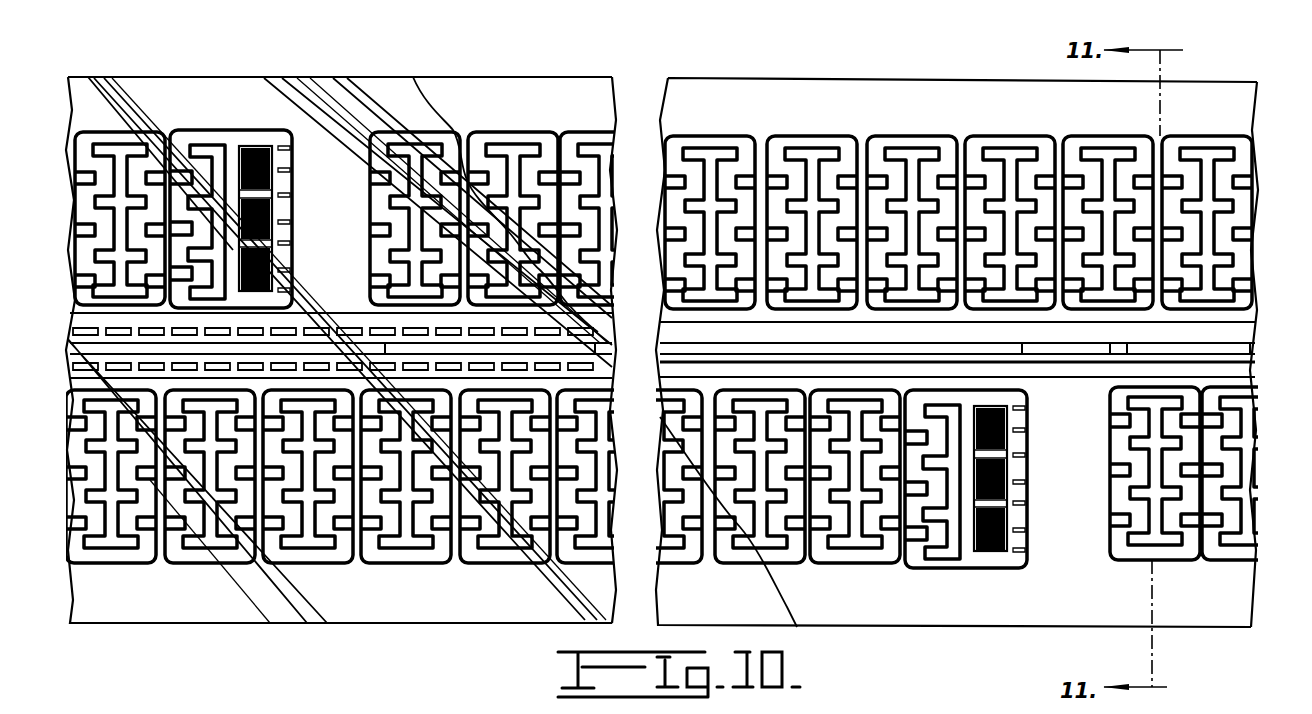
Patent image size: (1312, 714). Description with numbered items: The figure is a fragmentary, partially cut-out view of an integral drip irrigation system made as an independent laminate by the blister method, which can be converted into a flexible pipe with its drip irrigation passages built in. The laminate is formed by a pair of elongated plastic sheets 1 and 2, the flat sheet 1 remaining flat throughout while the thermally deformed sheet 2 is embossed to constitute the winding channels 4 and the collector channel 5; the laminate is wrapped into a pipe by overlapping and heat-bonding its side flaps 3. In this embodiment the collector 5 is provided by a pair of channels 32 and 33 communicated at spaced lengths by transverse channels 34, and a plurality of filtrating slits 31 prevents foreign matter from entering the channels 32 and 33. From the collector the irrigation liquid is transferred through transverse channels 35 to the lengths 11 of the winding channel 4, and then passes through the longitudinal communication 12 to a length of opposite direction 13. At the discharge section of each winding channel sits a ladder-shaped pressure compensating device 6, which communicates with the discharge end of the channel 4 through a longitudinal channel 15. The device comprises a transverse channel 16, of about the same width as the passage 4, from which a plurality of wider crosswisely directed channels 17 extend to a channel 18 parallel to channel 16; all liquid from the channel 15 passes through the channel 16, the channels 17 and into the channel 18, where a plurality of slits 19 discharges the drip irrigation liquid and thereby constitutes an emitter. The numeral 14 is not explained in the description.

The flat plastic sheet 1 is at (802, 76).
The embossed plastic sheet 2 is at (275, 77).
The side flaps 3 is at (575, 84).
The winding channels 4 is at (514, 129).
The collector channel 5 is at (392, 317).
The ladder-shaped pressure compensating device 6 is at (264, 130).
The lengths of the winding channel 11 is at (378, 262).
The longitudinal communication 12 is at (115, 133).
The length of opposite direction 13 is at (140, 175).
The connecting strip 14 is at (140, 300).
The longitudinal channel 15 is at (205, 133).
The transverse channel 16 is at (234, 170).
The crosswisely directed channels 17 is at (262, 181).
The parallel channel 18 is at (278, 207).
The slits 19 is at (284, 247).
The filtrating slits 31 is at (110, 331).
The collector channel 32 is at (1062, 354).
The collector channel 33 is at (1022, 340).
The transverse channels 34 is at (385, 340).
The transverse channels 35 is at (382, 300).